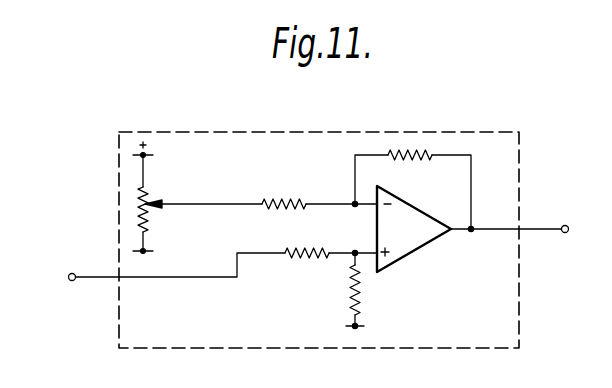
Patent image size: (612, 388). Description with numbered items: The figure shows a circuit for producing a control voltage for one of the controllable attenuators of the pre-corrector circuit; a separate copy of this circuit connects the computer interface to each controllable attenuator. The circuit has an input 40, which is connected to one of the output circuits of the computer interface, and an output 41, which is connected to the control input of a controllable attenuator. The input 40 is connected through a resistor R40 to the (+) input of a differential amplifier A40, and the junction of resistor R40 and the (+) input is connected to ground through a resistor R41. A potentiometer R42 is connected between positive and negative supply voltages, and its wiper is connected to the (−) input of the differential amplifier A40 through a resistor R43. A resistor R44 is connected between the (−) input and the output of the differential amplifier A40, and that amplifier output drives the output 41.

The differential amplifier A40 is at (409, 237).
The resistor R40 is at (286, 250).
The resistor R41 is at (353, 303).
The potentiometer R42 is at (146, 194).
The resistor R43 is at (284, 200).
The resistor R44 is at (413, 161).
The input 40 is at (161, 272).
The output 41 is at (524, 230).